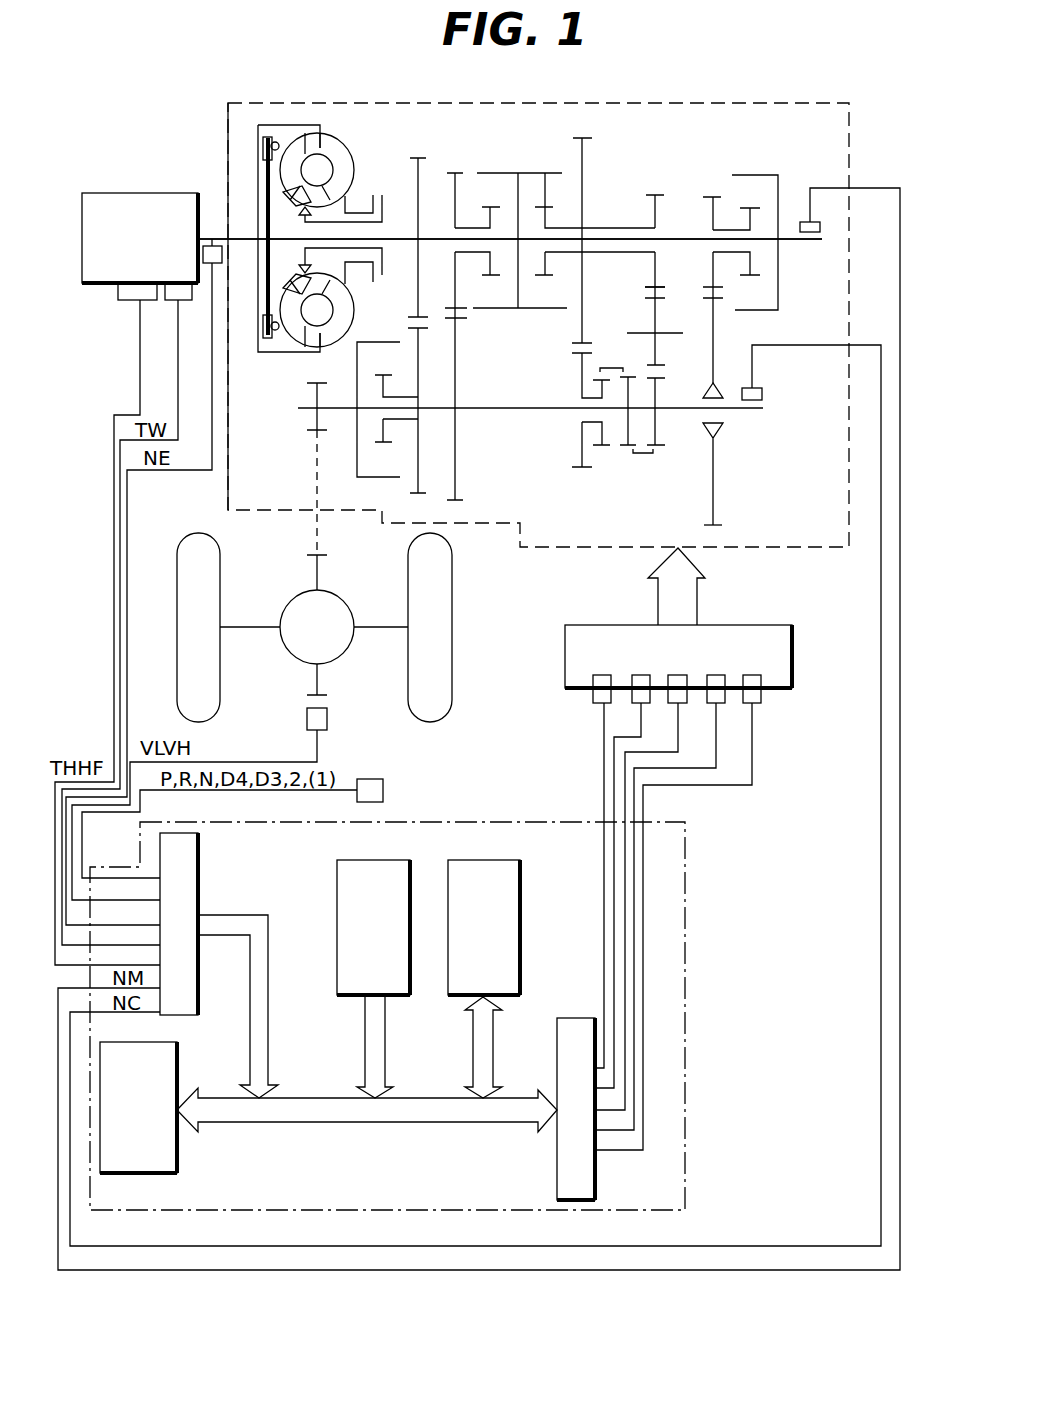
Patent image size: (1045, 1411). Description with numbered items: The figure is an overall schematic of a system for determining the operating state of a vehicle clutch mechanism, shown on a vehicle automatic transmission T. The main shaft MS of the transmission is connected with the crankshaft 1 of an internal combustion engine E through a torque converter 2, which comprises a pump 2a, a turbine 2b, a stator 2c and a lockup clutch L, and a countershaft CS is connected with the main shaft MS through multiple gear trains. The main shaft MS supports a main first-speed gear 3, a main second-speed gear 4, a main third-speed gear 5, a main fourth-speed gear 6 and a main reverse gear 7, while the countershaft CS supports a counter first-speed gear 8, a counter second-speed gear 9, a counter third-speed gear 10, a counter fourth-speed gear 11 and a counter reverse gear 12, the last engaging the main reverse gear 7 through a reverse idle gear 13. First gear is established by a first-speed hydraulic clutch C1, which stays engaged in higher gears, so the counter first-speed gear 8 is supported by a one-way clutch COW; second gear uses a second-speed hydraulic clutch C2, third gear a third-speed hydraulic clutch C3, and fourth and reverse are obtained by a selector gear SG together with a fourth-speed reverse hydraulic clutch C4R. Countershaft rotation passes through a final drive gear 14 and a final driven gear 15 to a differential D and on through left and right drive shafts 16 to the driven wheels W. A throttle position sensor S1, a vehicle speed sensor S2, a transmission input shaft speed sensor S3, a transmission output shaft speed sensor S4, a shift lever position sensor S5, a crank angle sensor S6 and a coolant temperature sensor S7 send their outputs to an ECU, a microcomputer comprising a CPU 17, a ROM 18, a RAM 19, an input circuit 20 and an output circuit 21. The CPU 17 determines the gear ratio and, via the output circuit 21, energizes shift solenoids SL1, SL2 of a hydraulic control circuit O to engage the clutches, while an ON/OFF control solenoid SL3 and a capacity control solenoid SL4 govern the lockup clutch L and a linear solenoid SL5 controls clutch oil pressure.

The internal combustion engine E is at (100, 193).
The crankshaft 1 is at (212, 232).
The torque converter 2 is at (329, 209).
The pump 2a is at (343, 170).
The turbine 2b is at (296, 145).
The stator 2c is at (304, 200).
The main first-speed gear 3 is at (713, 196).
The main second-speed gear 4 is at (455, 172).
The main third-speed gear 5 is at (414, 158).
The main fourth-speed gear 6 is at (585, 138).
The main reverse gear 7 is at (657, 195).
The counter first-speed gear 8 is at (716, 525).
The counter second-speed gear 9 is at (462, 500).
The counter third-speed gear 10 is at (418, 494).
The counter fourth-speed gear 11 is at (580, 467).
The counter reverse gear 12 is at (660, 445).
The reverse idle gear 13 is at (658, 298).
The final drive gear 14 is at (312, 383).
The final driven gear 15 is at (312, 556).
The drive shafts 16 is at (243, 630).
The CPU 17 is at (178, 1064).
The ROM 18 is at (337, 897).
The RAM 19 is at (520, 898).
The input circuit 20 is at (198, 872).
The output circuit 21 is at (557, 1150).
The vehicle automatic transmission T is at (845, 103).
The lockup clutch L is at (258, 125).
The main shaft MS is at (797, 244).
The countershaft CS is at (755, 410).
The first-speed hydraulic clutch C1 is at (757, 175).
The second-speed hydraulic clutch C2 is at (490, 172).
The third-speed hydraulic clutch C3 is at (365, 478).
The fourth-speed reverse hydraulic clutch C4R is at (545, 172).
The one-way clutch COW is at (740, 454).
The selector gear SG is at (615, 458).
The differential D is at (333, 605).
The driven wheels W is at (180, 605).
The hydraulic control circuit O is at (565, 647).
The shift solenoid SL1 is at (598, 700).
The shift solenoid SL2 is at (636, 700).
The ON/OFF control solenoid SL3 is at (680, 700).
The capacity control solenoid SL4 is at (718, 700).
The linear solenoid SL5 is at (757, 700).
The throttle position sensor S1 is at (125, 292).
The vehicle speed sensor S2 is at (327, 718).
The transmission input shaft speed sensor S3 is at (814, 222).
The transmission output shaft speed sensor S4 is at (765, 392).
The shift lever position sensor S5 is at (383, 790).
The crank angle sensor S6 is at (212, 246).
The coolant temperature sensor S7 is at (172, 292).
The electronic control unit ECU is at (687, 985).